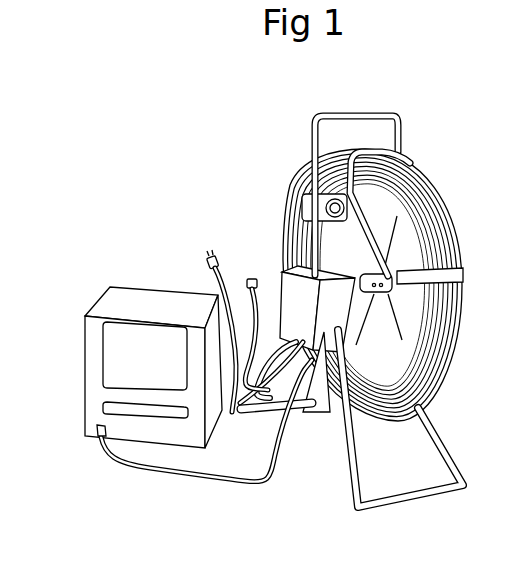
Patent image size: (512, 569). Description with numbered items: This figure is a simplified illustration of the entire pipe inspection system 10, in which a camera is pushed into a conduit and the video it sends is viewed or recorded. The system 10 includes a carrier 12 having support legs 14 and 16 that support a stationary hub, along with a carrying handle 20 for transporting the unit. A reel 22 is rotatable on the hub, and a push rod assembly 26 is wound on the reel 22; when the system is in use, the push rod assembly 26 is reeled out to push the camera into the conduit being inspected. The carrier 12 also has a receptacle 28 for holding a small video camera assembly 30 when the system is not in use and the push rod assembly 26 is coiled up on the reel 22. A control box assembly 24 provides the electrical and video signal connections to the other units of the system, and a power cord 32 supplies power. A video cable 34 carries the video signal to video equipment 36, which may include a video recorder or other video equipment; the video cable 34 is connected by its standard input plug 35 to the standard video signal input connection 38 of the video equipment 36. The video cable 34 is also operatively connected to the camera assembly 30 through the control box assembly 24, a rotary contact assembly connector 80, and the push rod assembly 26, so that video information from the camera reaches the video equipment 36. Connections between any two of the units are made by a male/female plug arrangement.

The system 10 is at (183, 145).
The carrier 12 is at (307, 127).
The support leg 14 is at (300, 406).
The support leg 16 is at (357, 487).
The carrying handle 20 is at (402, 127).
The reel 22 is at (446, 267).
The control box assembly 24 is at (295, 289).
The push rod assembly 26 is at (413, 182).
The receptacle 28 is at (318, 209).
The video camera assembly 30 is at (322, 166).
The power cord 32 is at (285, 300).
The video cable 34 is at (215, 482).
The standard input plug 35 is at (511, 536).
The video equipment 36 is at (139, 300).
The standard video signal input connection 38 is at (100, 433).
The rotary contact assembly connector 80 is at (356, 372).